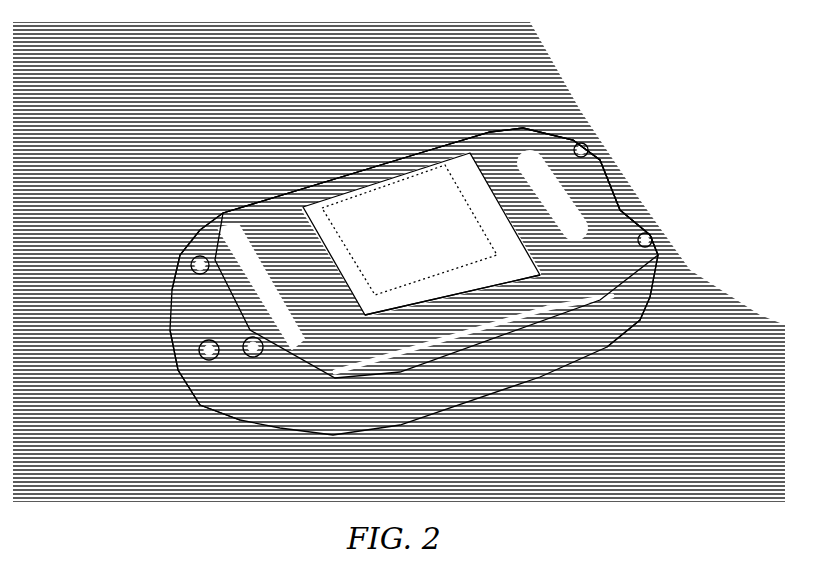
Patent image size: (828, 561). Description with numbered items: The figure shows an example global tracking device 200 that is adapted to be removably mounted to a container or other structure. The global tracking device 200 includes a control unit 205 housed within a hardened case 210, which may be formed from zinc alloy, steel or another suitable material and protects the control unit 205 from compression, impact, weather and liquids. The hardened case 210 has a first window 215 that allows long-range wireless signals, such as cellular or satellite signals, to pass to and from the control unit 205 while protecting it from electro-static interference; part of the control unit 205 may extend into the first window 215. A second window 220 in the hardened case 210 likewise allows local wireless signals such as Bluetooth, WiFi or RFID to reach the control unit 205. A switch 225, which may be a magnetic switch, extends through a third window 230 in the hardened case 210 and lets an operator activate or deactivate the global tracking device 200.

The global tracking device 200 is at (696, 95).
The control unit 205 is at (314, 196).
The hardened case 210 is at (490, 132).
The first window 215 is at (364, 171).
The second window 220 is at (607, 190).
The switch 225 is at (350, 298).
The third window 230 is at (400, 313).